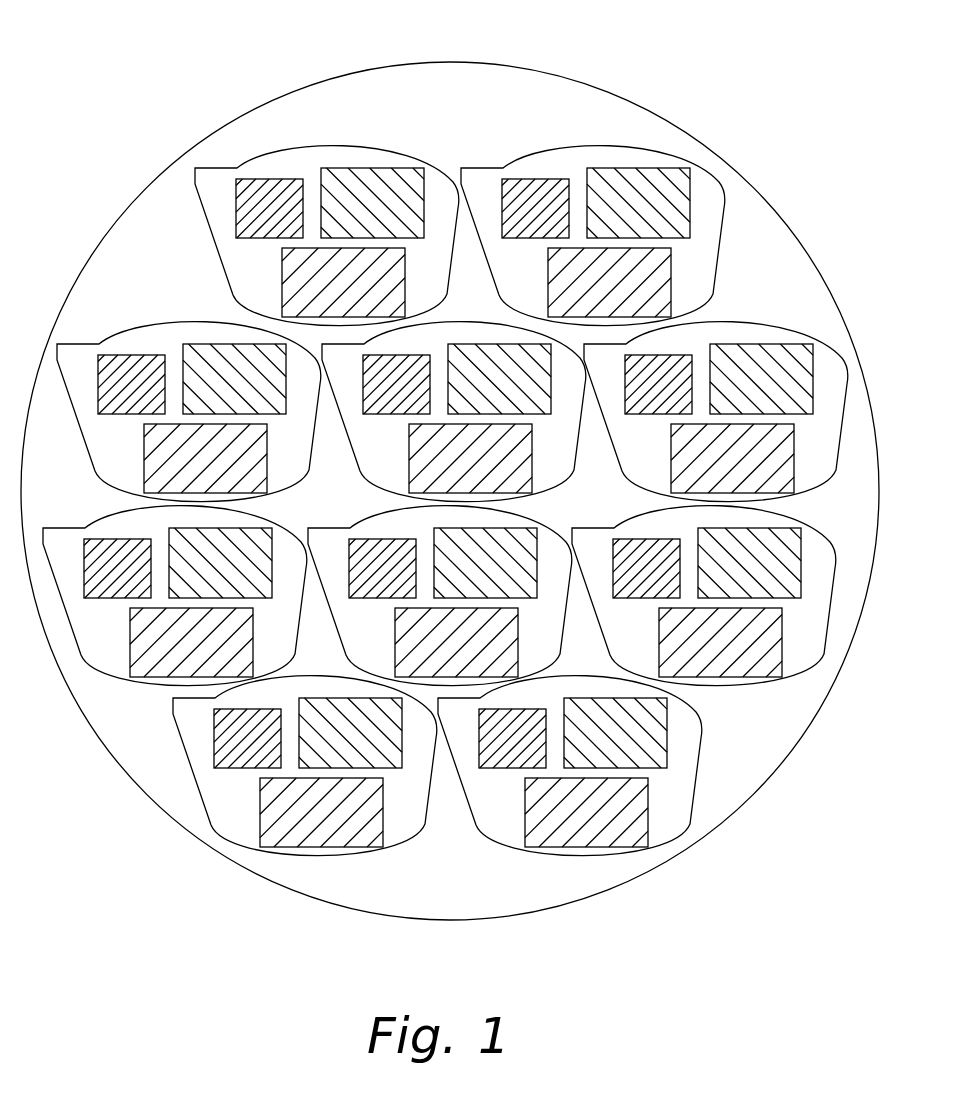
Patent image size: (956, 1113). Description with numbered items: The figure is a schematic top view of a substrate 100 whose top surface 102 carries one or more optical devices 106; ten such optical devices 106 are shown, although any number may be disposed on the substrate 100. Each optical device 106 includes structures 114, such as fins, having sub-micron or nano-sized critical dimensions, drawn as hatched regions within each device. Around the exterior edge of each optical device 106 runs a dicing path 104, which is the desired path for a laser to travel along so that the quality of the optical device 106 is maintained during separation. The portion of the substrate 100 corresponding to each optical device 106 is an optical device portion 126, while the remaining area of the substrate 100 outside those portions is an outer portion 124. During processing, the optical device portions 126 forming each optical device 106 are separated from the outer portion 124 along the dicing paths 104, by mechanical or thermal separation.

The substrate 100 is at (137, 43).
The top surface 102 is at (458, 90).
The dicing path 104 is at (185, 323).
The optical device 106 is at (110, 460).
The structures 114 is at (252, 393).
The outer portion 124 is at (787, 295).
The optical device portion 126 is at (400, 450).